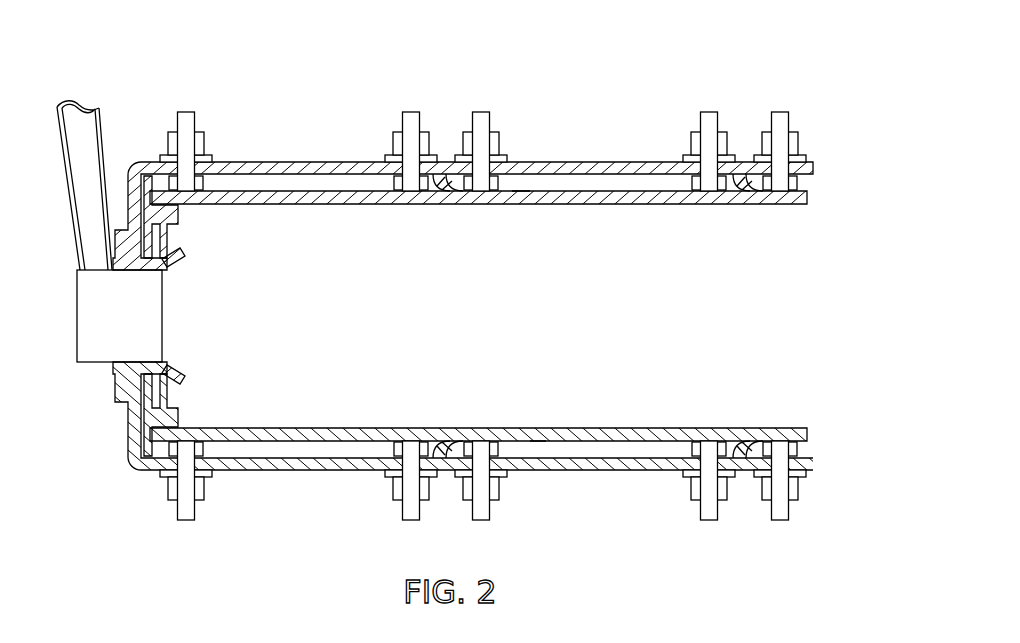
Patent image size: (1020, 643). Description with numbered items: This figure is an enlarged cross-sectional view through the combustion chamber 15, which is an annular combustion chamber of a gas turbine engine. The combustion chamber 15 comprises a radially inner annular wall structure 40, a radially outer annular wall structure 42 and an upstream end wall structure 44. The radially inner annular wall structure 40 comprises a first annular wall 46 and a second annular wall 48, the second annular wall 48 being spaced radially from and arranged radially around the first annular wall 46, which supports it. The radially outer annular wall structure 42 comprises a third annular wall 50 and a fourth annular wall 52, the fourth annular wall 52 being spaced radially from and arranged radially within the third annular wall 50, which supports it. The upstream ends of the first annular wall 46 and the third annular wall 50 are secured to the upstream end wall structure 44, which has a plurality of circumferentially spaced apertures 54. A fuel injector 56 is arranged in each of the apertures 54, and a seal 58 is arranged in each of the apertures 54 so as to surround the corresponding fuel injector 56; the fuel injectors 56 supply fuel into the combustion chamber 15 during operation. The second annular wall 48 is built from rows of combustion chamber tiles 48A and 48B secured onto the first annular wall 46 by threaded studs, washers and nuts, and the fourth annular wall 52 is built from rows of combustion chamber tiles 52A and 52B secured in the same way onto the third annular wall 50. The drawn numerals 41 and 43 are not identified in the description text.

The combustion chamber 15 is at (656, 81).
The radially inner annular wall structure 40 is at (484, 448).
The insulating layer 41 is at (521, 190).
The radially outer annular wall structure 42 is at (818, 162).
The offset bend portion 43 is at (518, 204).
The upstream end wall structure 44 is at (134, 410).
The first annular wall 46 is at (444, 448).
The second annular wall 48 is at (478, 405).
The combustion chamber tiles 48A is at (318, 428).
The combustion chamber tiles 48B is at (575, 428).
The third annular wall 50 is at (659, 172).
The fourth annular wall 52 is at (478, 227).
The combustion chamber tiles 52A is at (302, 205).
The combustion chamber tiles 52B is at (548, 204).
The apertures 54 is at (172, 366).
The fuel injectors 56 is at (92, 328).
The seals 58 is at (172, 266).